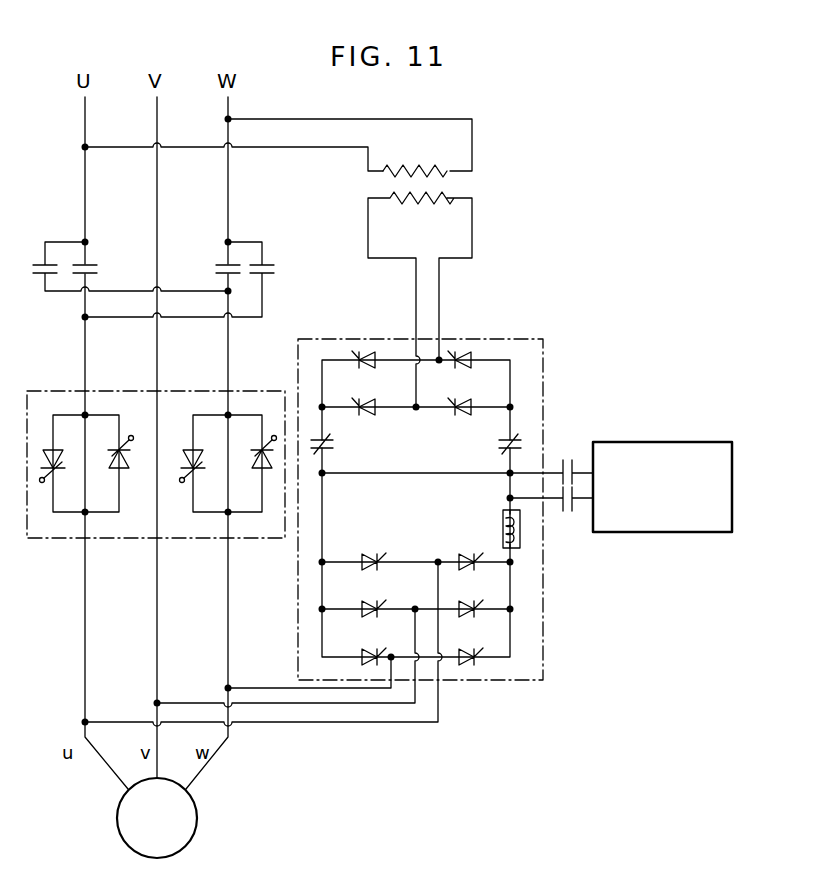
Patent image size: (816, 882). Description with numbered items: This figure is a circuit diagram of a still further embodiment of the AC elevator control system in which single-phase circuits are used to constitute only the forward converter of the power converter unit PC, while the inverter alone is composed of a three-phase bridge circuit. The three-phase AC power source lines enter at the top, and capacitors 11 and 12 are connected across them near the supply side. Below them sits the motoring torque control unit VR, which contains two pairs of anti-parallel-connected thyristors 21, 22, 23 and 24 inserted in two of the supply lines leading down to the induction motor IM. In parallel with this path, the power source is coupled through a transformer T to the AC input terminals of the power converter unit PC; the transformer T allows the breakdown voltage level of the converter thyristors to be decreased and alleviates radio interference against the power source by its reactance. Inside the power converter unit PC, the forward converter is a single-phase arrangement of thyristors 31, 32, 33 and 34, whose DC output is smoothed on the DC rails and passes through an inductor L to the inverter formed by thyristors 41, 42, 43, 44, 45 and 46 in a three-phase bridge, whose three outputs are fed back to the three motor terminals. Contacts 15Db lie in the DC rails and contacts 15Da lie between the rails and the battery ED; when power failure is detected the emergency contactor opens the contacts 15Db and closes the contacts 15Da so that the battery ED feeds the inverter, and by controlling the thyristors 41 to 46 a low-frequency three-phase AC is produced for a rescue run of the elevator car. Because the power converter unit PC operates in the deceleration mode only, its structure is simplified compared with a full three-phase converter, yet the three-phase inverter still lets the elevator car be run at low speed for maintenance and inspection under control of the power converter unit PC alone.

The capacitor 11 is at (96, 267).
The capacitor 12 is at (36, 267).
The thyristor 21 is at (56, 462).
The thyristor 22 is at (110, 460).
The thyristor 23 is at (196, 462).
The thyristor 24 is at (252, 460).
The thyristor 31 is at (369, 367).
The thyristor 32 is at (464, 367).
The thyristor 33 is at (372, 413).
The thyristor 34 is at (470, 414).
The thyristor 41 is at (366, 552).
The thyristor 42 is at (460, 552).
The thyristor 43 is at (362, 604).
The thyristor 44 is at (467, 602).
The thyristor 45 is at (362, 652).
The thyristor 46 is at (467, 650).
The contact 15Da is at (565, 458).
The contact 15Db is at (330, 442).
The inductor L is at (497, 526).
The transformer T is at (506, 200).
The power converter unit PC is at (533, 339).
The motoring torque control unit VR is at (69, 391).
The battery ED is at (653, 442).
The induction motor IM is at (197, 815).